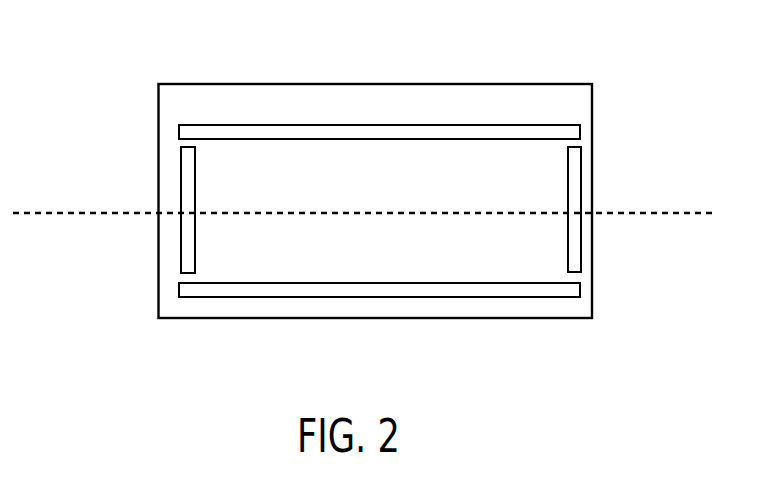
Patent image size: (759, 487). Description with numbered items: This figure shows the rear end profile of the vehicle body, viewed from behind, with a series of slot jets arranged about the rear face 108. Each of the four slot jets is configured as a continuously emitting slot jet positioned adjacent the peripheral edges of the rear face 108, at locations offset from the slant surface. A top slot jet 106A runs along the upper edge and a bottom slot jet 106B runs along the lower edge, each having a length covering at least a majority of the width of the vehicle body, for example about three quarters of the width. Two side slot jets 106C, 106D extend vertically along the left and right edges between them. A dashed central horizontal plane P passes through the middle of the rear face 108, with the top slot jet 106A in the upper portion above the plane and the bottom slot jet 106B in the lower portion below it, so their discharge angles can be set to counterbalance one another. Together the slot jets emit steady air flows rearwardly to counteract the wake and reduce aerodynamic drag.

The rear face 108 is at (593, 168).
The top slot jet 106A is at (542, 124).
The bottom slot jet 106B is at (525, 297).
The side slot jet 106C is at (195, 166).
The side slot jet 106D is at (581, 223).
The central horizontal plane P is at (688, 212).